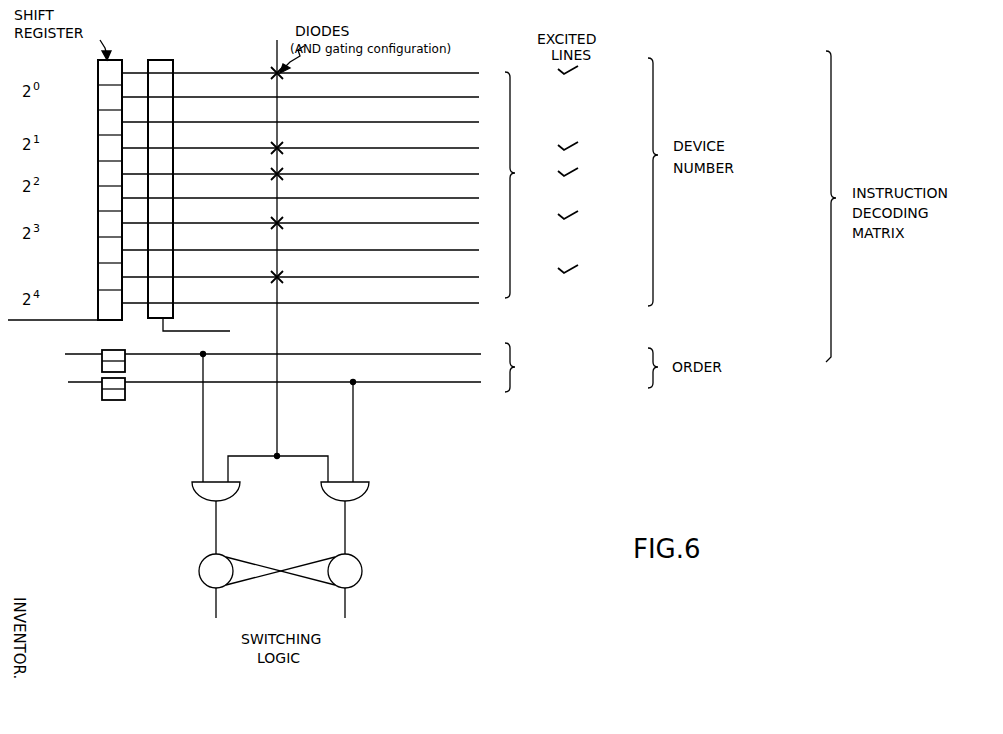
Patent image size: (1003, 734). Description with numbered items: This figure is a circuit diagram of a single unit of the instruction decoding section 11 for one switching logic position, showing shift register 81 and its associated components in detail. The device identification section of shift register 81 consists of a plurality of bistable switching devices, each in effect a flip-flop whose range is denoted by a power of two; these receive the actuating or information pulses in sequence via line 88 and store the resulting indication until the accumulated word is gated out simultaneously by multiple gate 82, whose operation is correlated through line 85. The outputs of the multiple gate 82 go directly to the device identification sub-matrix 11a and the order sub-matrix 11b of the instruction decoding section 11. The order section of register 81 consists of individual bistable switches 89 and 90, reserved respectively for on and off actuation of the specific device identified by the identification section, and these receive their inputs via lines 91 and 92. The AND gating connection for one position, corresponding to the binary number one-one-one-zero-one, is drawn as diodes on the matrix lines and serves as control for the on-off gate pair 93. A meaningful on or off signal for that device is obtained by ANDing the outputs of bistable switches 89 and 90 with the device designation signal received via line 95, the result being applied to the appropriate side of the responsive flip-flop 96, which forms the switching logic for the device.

The instruction decoding section 11 is at (527, 248).
The device identification sub-matrix 11a is at (524, 185).
The order sub-matrix 11b is at (527, 367).
The shift register 81 is at (91, 186).
The multiple gate 82 is at (174, 174).
The line 85 is at (193, 330).
The line 88 is at (62, 321).
The bistable switch 89 is at (126, 351).
The bistable switch 90 is at (126, 395).
The line 91 is at (70, 346).
The line 92 is at (70, 395).
The on-off gate pair 93 is at (270, 486).
The line 95 is at (281, 425).
The flip-flop 96 is at (277, 583).